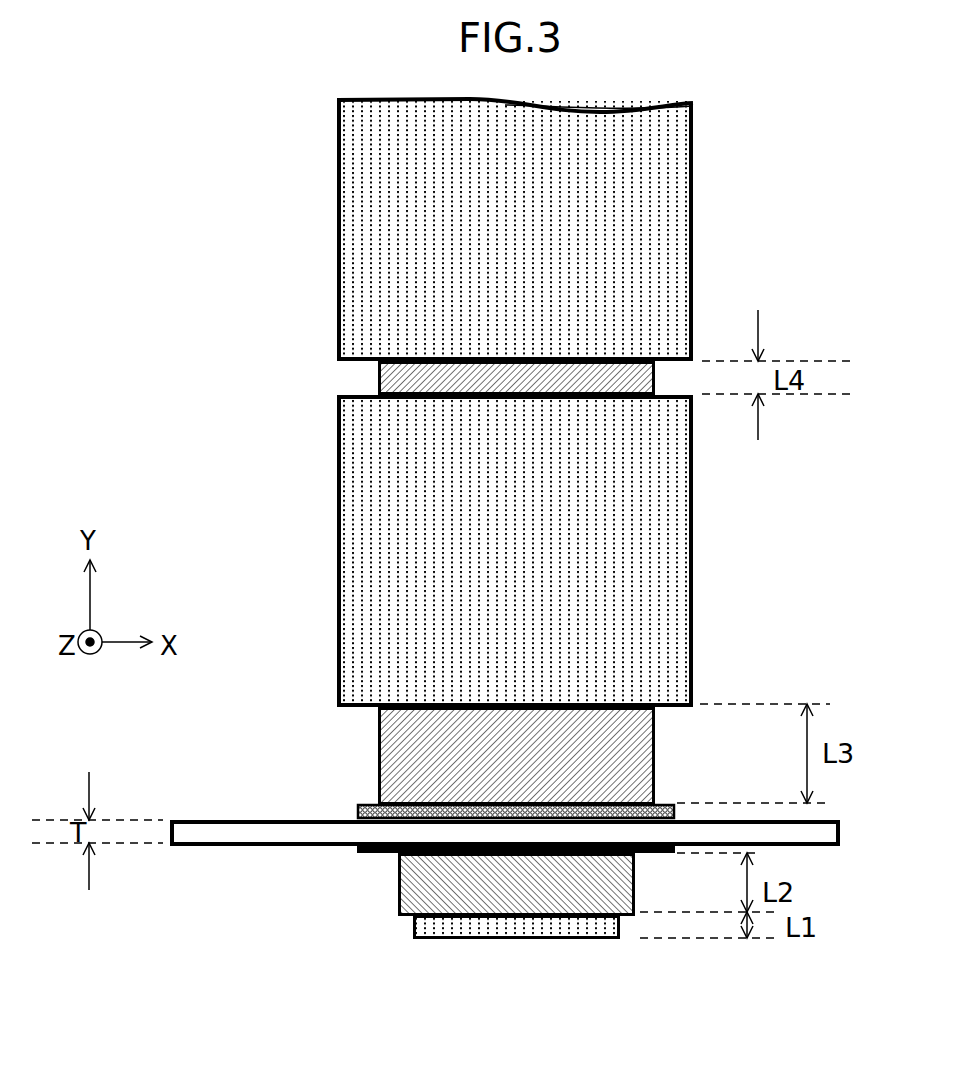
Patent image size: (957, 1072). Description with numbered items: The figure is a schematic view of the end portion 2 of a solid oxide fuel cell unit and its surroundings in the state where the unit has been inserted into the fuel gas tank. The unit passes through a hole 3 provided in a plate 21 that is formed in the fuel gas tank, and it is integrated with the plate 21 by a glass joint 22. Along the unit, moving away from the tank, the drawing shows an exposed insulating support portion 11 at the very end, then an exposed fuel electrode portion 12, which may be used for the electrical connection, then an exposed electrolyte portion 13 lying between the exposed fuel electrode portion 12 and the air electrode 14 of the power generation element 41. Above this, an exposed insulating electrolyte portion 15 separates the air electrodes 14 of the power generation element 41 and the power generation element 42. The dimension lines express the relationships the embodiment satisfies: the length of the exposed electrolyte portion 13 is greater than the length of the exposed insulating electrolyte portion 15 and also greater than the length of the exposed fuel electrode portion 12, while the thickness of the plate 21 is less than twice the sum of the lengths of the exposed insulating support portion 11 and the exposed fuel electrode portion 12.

The end portion 2 is at (518, 934).
The hole 3 is at (650, 860).
The exposed insulating support portion 11 is at (465, 925).
The exposed fuel electrode portion 12 is at (492, 882).
The exposed electrolyte portion 13 is at (413, 766).
The air electrode 14 is at (405, 543).
The exposed insulating electrolyte portion 15 is at (415, 378).
The plate 21 is at (270, 832).
The glass joint 22 is at (678, 812).
The power generation element 41 is at (708, 552).
The power generation element 42 is at (708, 228).